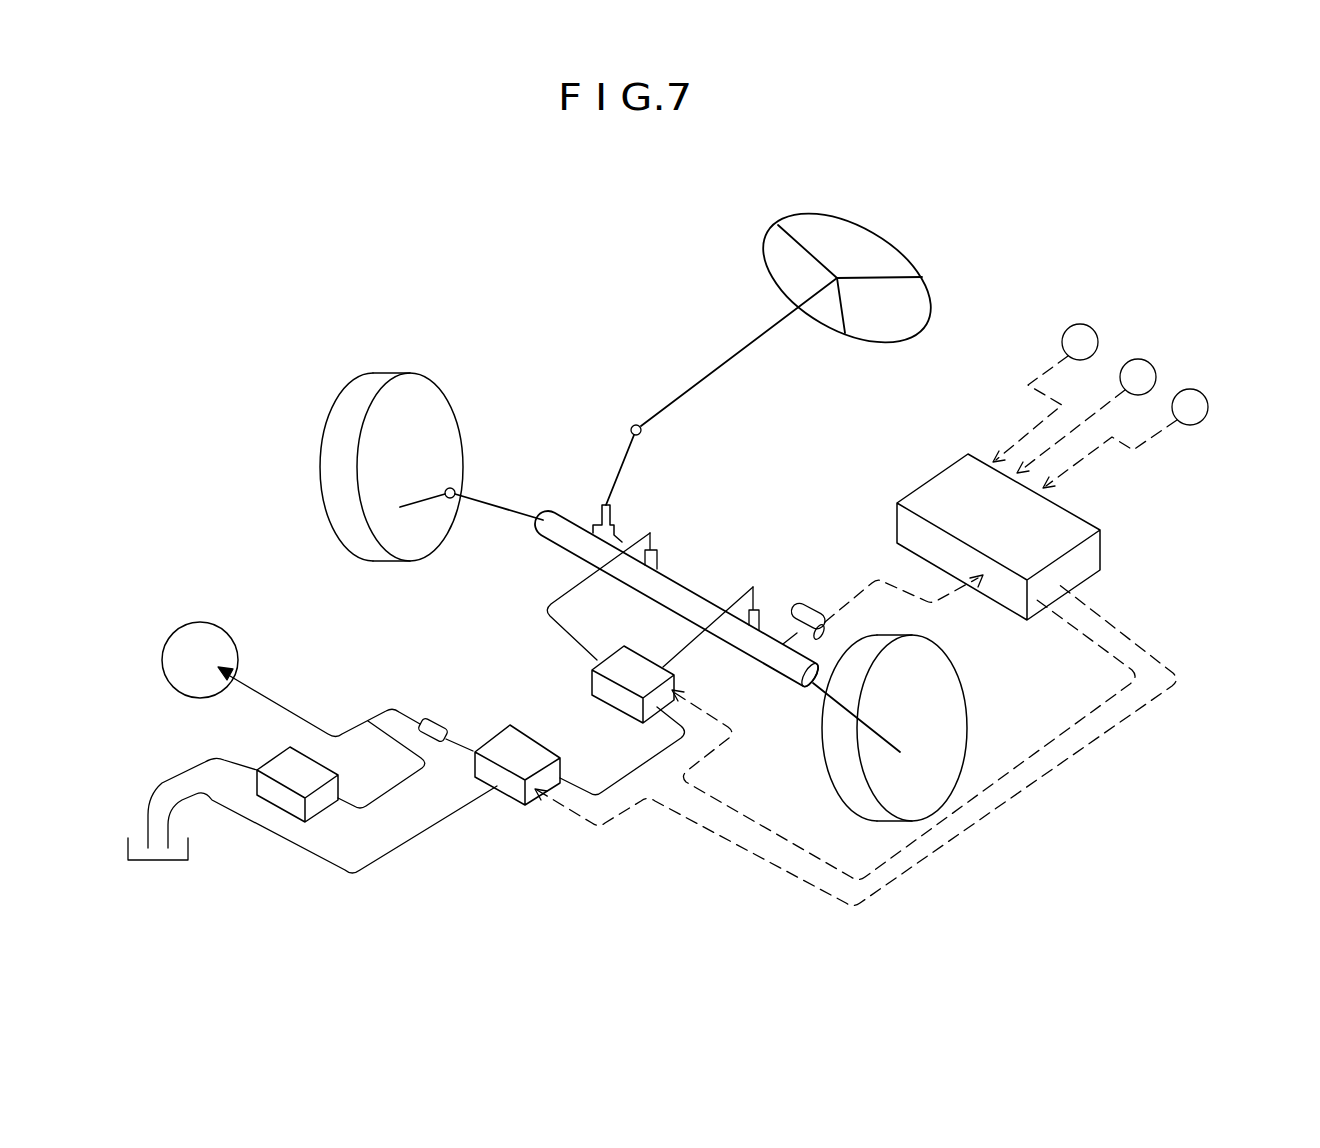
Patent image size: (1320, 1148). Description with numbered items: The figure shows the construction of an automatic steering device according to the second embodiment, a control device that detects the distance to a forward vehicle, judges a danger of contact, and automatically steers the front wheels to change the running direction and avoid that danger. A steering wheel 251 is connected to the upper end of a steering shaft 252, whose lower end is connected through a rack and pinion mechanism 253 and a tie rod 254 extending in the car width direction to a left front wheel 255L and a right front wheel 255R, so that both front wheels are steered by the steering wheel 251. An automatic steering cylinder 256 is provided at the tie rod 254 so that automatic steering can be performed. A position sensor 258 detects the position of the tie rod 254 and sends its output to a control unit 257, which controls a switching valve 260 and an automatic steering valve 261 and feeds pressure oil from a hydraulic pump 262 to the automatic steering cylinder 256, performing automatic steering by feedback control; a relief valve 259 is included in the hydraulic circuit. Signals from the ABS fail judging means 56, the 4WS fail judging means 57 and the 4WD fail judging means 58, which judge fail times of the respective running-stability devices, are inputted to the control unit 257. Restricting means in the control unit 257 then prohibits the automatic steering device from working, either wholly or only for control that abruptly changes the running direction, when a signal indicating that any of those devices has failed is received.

The steering wheel 251 is at (912, 250).
The steering shaft 252 is at (740, 365).
The rack and pinion mechanism 253 is at (604, 522).
The tie rod 254 is at (512, 510).
The right front wheel 255R is at (335, 437).
The left front wheel 255L is at (970, 720).
The automatic steering cylinder 256 is at (683, 593).
The control unit 257 is at (1108, 518).
The position sensor 258 is at (797, 607).
The relief valve 259 is at (336, 768).
The switching valve 260 is at (660, 668).
The automatic steering valve 261 is at (537, 750).
The hydraulic pump 262 is at (237, 640).
The ABS fail judging means 56 is at (1090, 326).
The 4WS fail judging means 57 is at (1145, 360).
The 4WD fail judging means 58 is at (1203, 392).